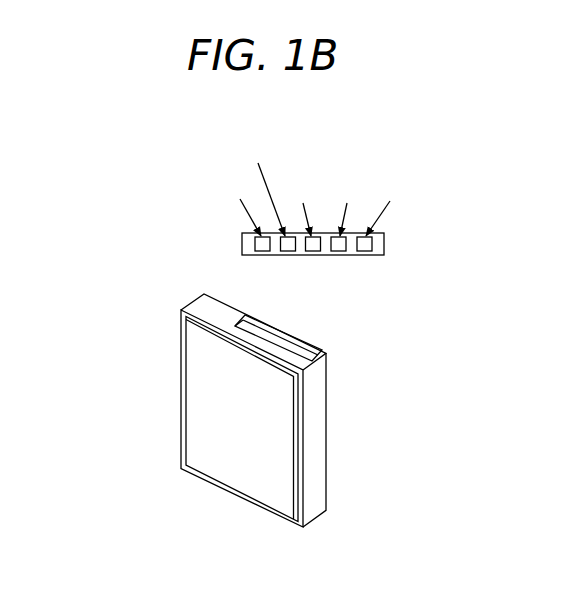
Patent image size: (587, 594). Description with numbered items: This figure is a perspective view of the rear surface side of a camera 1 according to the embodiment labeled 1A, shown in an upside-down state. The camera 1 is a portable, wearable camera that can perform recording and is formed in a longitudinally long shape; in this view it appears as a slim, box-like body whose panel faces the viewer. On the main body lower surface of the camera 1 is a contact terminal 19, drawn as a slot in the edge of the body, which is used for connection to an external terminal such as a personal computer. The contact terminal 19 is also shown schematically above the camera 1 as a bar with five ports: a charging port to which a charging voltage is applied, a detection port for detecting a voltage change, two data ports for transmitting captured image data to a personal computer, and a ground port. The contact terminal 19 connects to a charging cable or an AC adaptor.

The camera 1 is at (180, 412).
The image forming apparatus (first embodiment) 1A is at (242, 419).
The contact terminal 19 is at (363, 256).